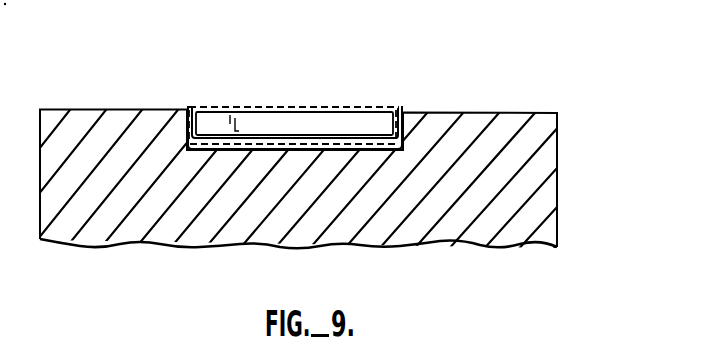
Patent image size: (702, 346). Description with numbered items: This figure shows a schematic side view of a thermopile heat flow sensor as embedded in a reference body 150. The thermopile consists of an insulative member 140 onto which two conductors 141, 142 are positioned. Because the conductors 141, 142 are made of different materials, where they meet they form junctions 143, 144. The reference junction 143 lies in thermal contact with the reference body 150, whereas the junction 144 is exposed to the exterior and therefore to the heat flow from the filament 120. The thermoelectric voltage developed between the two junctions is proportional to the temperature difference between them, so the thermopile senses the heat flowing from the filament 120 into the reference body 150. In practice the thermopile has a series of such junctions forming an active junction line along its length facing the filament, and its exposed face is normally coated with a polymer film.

The filament 120 is at (290, 46).
The insulative member 140 is at (373, 130).
The conductor 141 is at (195, 108).
The conductor 142 is at (340, 107).
The reference junction 143 is at (280, 155).
The junction 144 is at (285, 100).
The reference body 150 is at (537, 155).